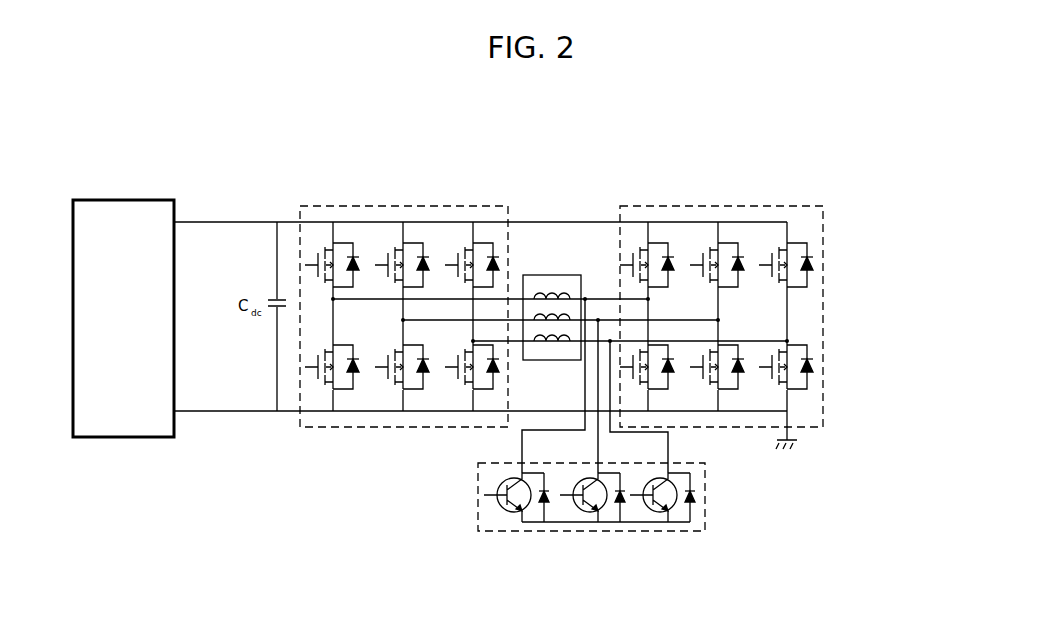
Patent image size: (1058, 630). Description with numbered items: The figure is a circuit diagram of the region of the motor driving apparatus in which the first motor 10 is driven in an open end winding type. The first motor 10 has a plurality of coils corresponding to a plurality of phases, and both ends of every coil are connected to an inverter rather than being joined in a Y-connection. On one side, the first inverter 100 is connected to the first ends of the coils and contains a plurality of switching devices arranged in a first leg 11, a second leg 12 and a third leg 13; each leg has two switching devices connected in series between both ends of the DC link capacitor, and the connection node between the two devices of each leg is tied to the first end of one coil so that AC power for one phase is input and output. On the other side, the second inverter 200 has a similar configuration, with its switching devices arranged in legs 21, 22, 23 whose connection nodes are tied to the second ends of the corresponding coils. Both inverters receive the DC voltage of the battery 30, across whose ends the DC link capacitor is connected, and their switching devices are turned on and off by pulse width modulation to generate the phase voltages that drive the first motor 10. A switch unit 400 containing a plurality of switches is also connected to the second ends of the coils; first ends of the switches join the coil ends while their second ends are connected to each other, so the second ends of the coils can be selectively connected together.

The battery 30 is at (127, 200).
The first inverter 100 is at (300, 427).
The first leg 11 is at (335, 212).
The second leg 12 is at (405, 212).
The third leg 13 is at (475, 212).
The first motor 10 is at (548, 275).
The second inverter 200 is at (823, 427).
The second leg 21 is at (650, 212).
The second leg 22 is at (720, 212).
The third leg 23 is at (789, 212).
The switch unit 400 is at (627, 531).